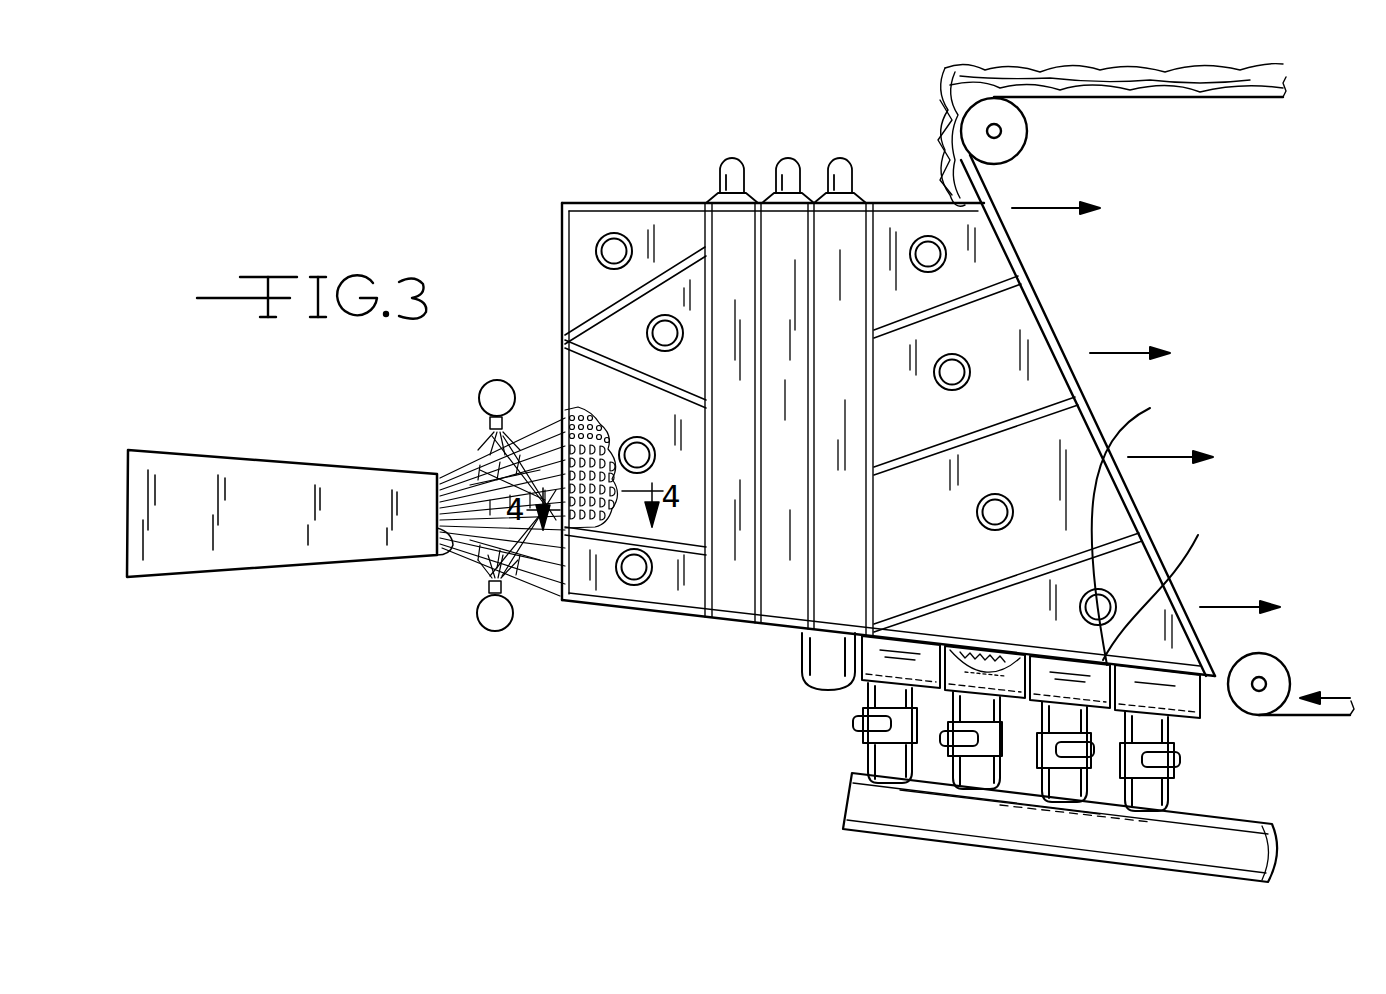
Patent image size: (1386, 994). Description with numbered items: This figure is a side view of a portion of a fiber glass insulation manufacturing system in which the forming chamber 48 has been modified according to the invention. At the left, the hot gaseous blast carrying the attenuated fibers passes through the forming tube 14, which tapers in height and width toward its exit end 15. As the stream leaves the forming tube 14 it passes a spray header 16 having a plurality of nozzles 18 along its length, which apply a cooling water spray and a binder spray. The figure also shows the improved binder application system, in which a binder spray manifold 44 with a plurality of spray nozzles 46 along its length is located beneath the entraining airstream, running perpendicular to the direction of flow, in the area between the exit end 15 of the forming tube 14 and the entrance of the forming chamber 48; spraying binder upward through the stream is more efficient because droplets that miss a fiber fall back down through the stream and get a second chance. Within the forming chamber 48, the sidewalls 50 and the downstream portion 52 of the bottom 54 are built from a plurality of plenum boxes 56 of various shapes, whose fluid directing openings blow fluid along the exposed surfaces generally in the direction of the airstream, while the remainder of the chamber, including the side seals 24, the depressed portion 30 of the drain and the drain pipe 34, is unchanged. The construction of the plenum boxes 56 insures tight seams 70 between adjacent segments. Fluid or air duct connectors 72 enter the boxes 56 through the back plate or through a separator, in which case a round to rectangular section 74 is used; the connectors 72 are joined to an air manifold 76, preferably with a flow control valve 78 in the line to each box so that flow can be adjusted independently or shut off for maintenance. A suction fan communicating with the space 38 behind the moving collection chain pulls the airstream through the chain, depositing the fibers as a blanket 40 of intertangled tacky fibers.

The forming tube 14 is at (252, 583).
The exit end 15 is at (450, 552).
The spray header 16 is at (482, 392).
The nozzles 18 is at (487, 424).
The side seals 24 is at (1042, 334).
The depressed portion 30 is at (832, 633).
The drain pipe 34 is at (817, 693).
The space 38 is at (1216, 322).
The blanket 40 is at (963, 70).
The binder spray manifold 44 is at (490, 630).
The spray nozzles 46 is at (507, 593).
The forming chamber 48 is at (664, 196).
The sidewalls 50 is at (728, 222).
The downstream portion 52 is at (1175, 576).
The bottom 54 is at (728, 623).
The plenum boxes 56 is at (594, 425).
The seams 70 is at (672, 262).
The air duct connector 72 is at (596, 250).
The round to rectangular section 74 is at (857, 196).
The air manifold 76 is at (857, 808).
The flow control valve 78 is at (1173, 777).